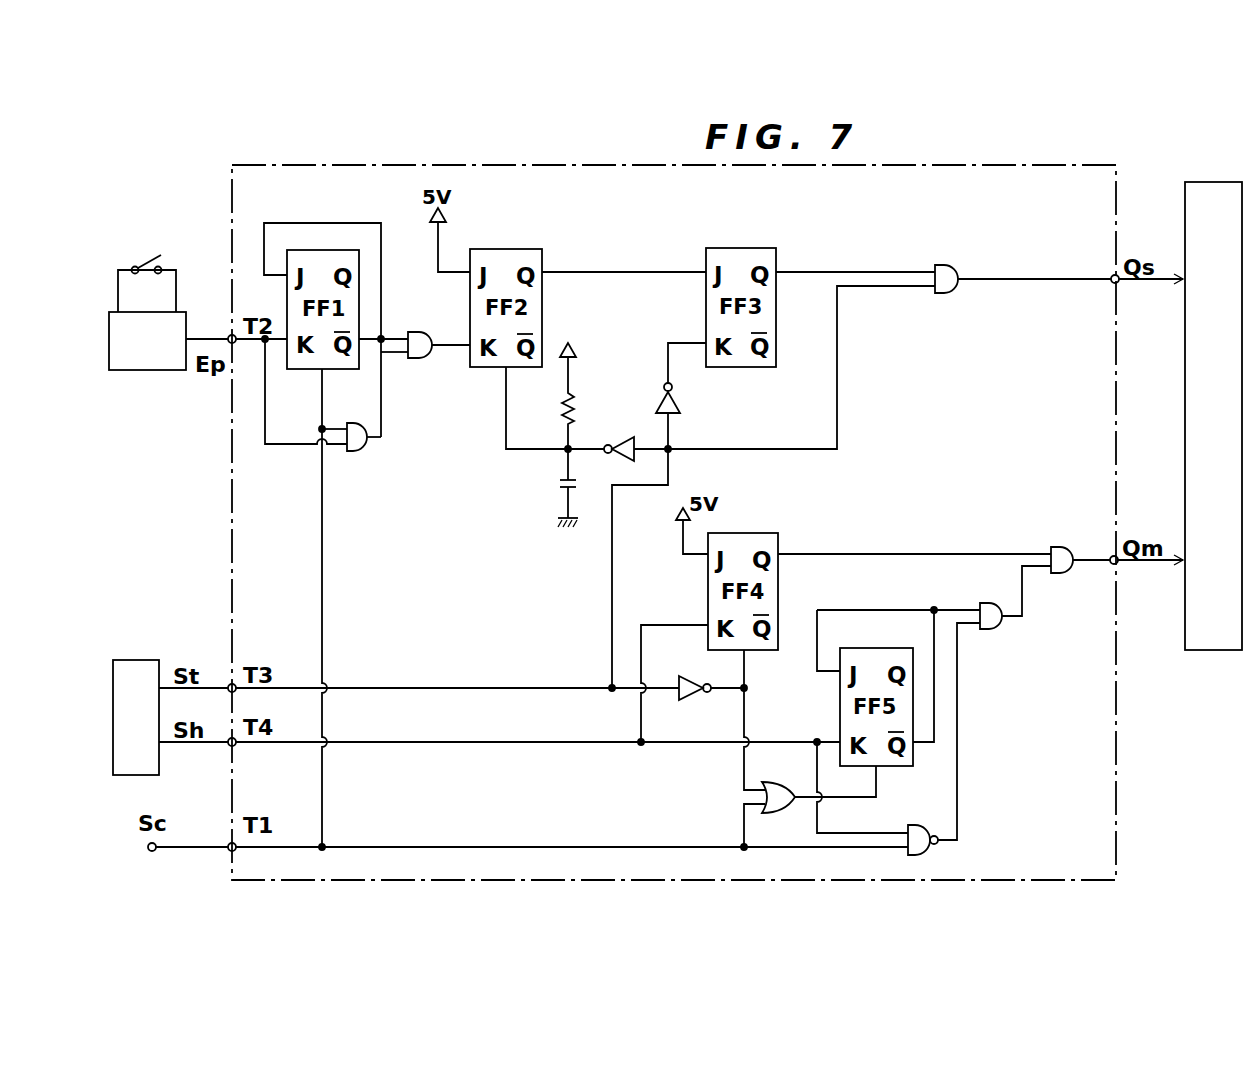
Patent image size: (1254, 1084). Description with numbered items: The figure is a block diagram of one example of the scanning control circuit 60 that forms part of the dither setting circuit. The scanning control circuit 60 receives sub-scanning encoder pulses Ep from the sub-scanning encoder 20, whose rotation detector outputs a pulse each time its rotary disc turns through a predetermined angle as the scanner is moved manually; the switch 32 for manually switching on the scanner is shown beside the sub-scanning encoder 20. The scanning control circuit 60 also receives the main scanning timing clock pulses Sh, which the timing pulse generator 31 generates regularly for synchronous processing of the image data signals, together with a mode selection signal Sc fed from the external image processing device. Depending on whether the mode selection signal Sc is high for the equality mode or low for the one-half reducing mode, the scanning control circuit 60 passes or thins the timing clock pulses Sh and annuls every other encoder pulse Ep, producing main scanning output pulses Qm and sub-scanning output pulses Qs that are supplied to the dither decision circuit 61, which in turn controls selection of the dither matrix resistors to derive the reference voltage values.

The sub-scanning encoder 20 is at (161, 353).
The timing pulse generator 31 is at (150, 733).
The switch 32 is at (151, 250).
The scanning control circuit 60 is at (229, 512).
The dither decision circuit 61 is at (1213, 641).